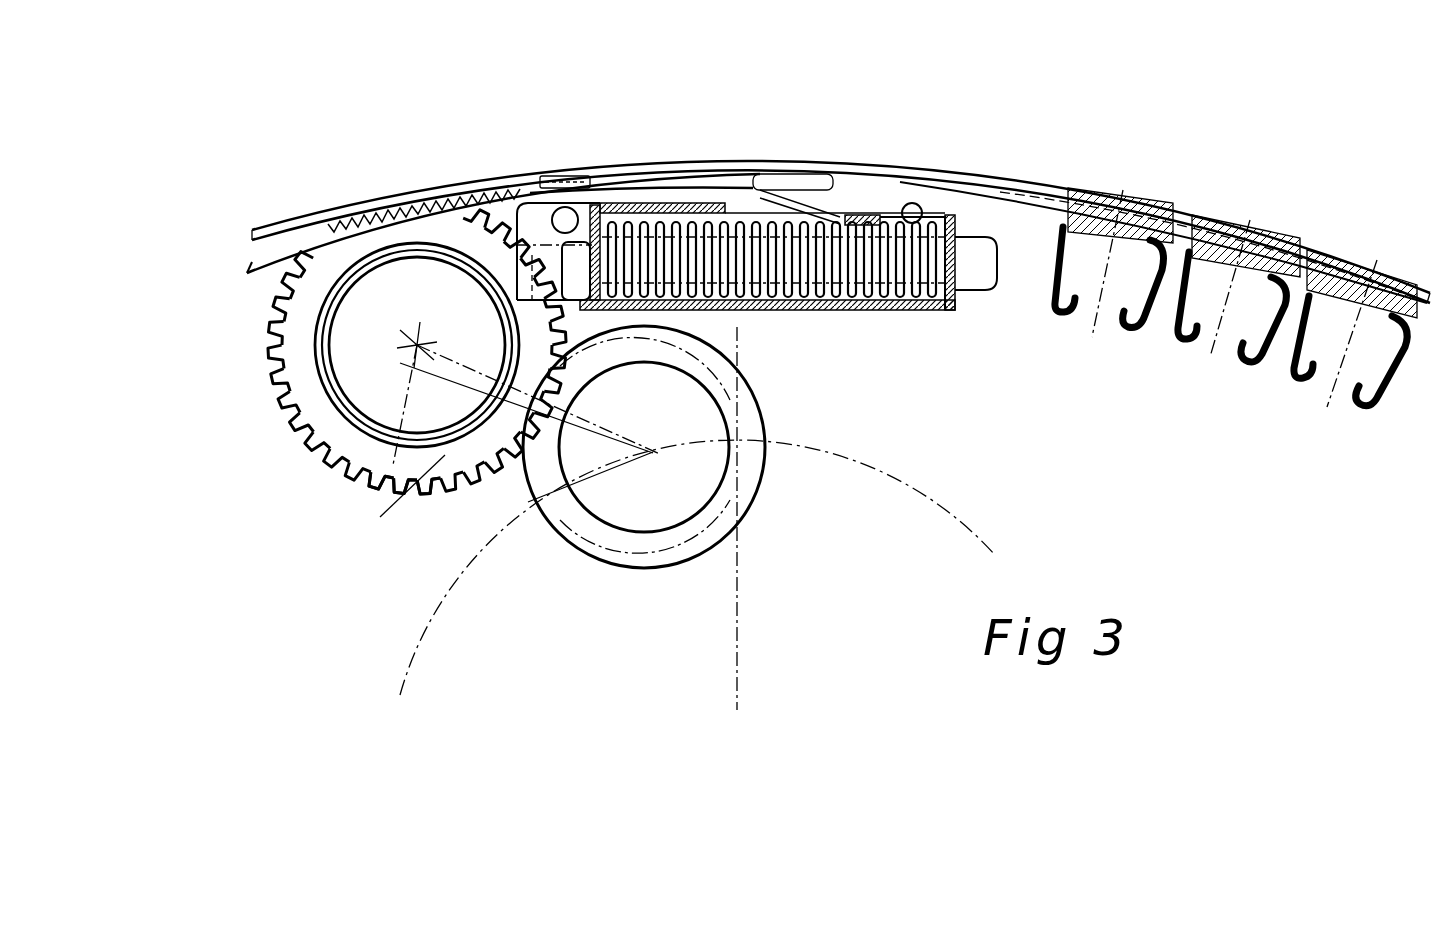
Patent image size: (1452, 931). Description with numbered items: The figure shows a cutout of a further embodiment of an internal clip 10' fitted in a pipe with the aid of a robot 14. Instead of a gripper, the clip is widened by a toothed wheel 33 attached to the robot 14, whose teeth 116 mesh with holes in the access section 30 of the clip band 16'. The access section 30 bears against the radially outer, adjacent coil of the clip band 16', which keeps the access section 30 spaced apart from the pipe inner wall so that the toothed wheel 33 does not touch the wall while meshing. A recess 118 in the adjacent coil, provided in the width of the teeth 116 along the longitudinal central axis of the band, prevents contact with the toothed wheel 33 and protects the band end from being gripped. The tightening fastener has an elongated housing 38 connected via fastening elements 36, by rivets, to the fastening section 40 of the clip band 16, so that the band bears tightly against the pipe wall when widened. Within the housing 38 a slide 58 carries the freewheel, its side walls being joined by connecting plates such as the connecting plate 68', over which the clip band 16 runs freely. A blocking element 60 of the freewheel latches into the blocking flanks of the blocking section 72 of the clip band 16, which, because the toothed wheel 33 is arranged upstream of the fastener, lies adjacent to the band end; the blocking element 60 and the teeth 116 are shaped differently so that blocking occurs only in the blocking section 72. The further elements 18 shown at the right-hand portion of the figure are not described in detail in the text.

The internal clip 10' is at (900, 518).
The robot 14 is at (968, 522).
The clip band 16 is at (808, 209).
The clip band 16' is at (503, 194).
The hooks 18 is at (1308, 400).
The access section 30 is at (250, 262).
The toothed wheel 33 is at (290, 432).
The fastening elements 36 is at (915, 175).
The housing 38 is at (780, 303).
The fastening section 40 is at (740, 165).
The slide 58 is at (640, 180).
The blocking element 60 is at (805, 185).
The connecting plate 68' is at (875, 117).
The blocking section 72 is at (690, 190).
The teeth 116 is at (440, 490).
The recess 118 is at (440, 185).